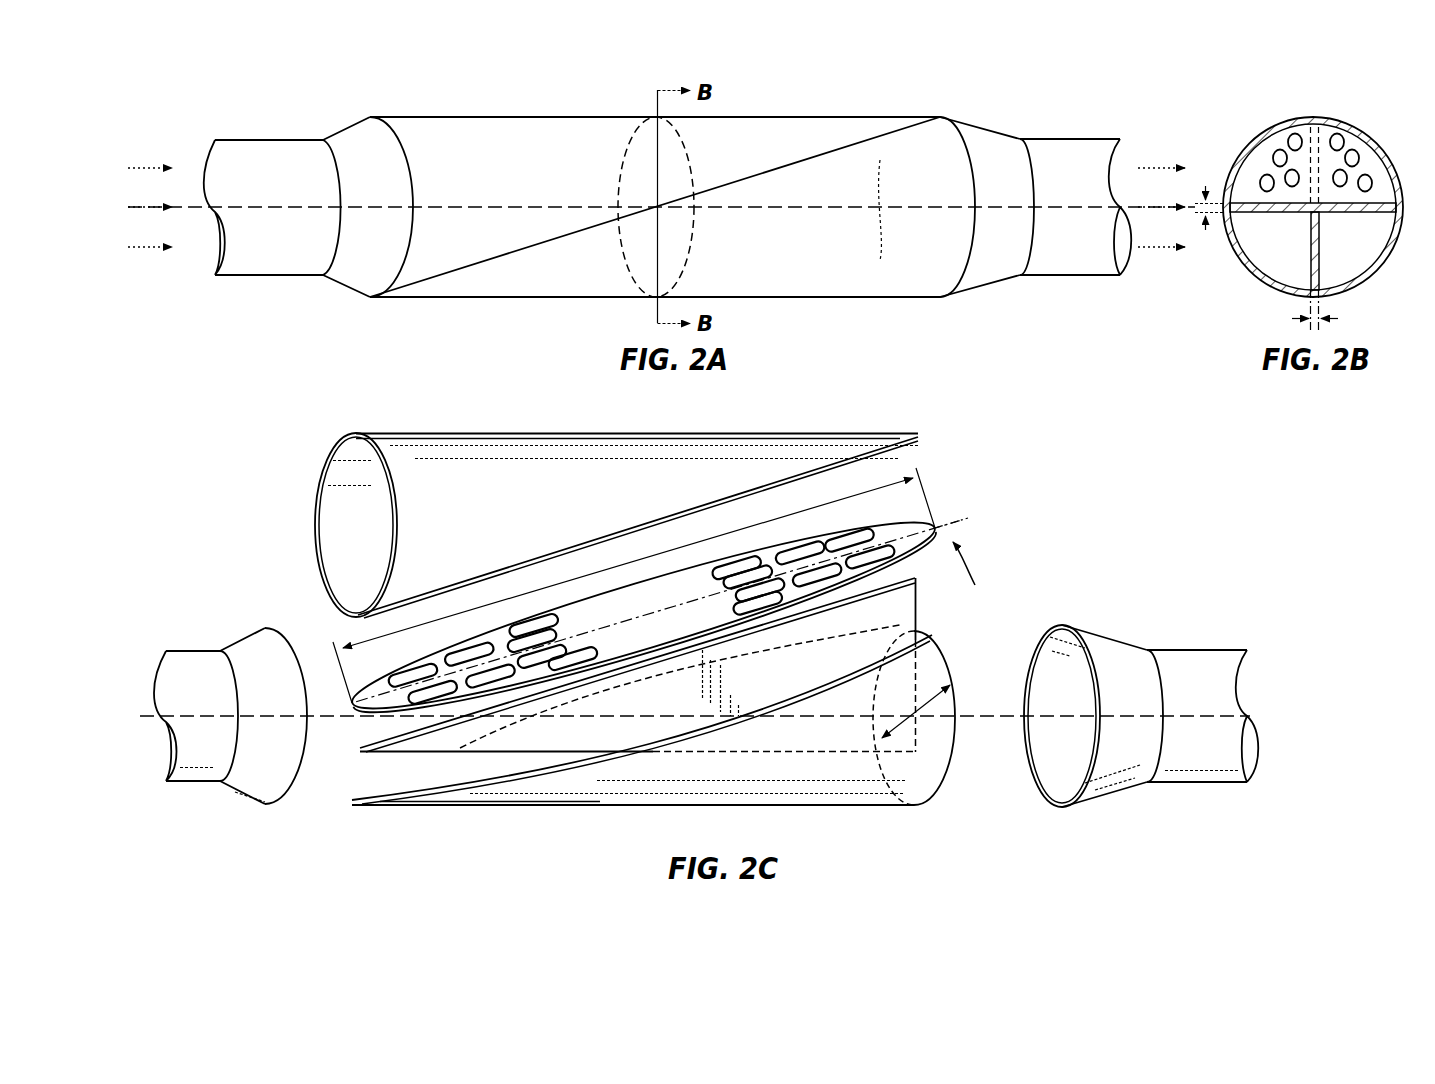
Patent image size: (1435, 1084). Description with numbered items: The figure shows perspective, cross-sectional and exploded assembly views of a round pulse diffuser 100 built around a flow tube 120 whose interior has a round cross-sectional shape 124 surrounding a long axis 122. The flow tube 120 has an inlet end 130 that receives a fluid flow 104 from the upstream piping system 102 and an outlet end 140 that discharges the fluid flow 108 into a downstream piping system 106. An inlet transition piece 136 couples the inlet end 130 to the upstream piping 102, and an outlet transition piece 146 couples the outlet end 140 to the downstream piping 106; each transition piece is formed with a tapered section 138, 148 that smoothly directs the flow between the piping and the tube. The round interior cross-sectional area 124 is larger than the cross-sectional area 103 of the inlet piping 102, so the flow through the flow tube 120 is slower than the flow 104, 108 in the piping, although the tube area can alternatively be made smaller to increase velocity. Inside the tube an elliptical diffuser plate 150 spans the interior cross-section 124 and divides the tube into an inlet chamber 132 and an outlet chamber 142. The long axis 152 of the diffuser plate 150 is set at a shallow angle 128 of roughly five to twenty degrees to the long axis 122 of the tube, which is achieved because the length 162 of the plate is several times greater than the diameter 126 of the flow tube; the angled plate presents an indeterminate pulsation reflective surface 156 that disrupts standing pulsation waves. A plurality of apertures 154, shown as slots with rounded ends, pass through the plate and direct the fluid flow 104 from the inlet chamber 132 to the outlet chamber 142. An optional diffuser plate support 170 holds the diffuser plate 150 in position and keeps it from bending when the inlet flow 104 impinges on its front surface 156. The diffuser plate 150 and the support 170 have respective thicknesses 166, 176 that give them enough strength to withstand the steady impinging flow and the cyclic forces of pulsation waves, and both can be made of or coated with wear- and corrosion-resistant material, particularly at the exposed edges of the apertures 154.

In FIG. 2A, the round pulse diffuser 100 is at (960, 92).
In FIG. 2C, the round pulse diffuser 100 is at (218, 476).
In FIG. 2A, the upstream piping system 102 is at (262, 138).
In FIG. 2C, the upstream piping system 102 is at (197, 651).
In FIG. 2C, the cross-sectional area of the inlet piping 103 is at (168, 750).
In FIG. 2A, the fluid flow 104 is at (155, 160).
In FIG. 2C, the fluid flow 104 is at (1250, 676).
In FIG. 2A, the downstream piping system 106 is at (1075, 139).
In FIG. 2C, the downstream piping system 106 is at (1205, 650).
In FIG. 2A, the fluid flow 108 is at (1157, 155).
In FIG. 2A, the flow tube 120 is at (530, 117).
In FIG. 2C, the flow tube 120 is at (835, 810).
In FIG. 2A, the long axis 122 is at (888, 210).
In FIG. 2A, the round cross-sectional shape 124 is at (690, 155).
In FIG. 2B, the round cross-sectional shape 124 is at (1233, 240).
In FIG. 2C, the diameter 126 is at (928, 708).
In FIG. 2C, the shallow angle 128 is at (986, 670).
In FIG. 2A, the inlet end 130 is at (372, 298).
In FIG. 2C, the inlet chamber 132 is at (352, 507).
In FIG. 2A, the inlet transition piece 136 is at (345, 122).
In FIG. 2C, the inlet transition piece 136 is at (244, 788).
In FIG. 2C, the tapered section 138 is at (240, 630).
In FIG. 2A, the outlet end 140 is at (958, 297).
In FIG. 2C, the outlet chamber 142 is at (928, 770).
In FIG. 2A, the outlet transition piece 146 is at (985, 128).
In FIG. 2C, the outlet transition piece 146 is at (1113, 642).
In FIG. 2C, the tapered section 148 is at (1118, 768).
In FIG. 2B, the elliptical diffuser plate 150 is at (1363, 160).
In FIG. 2C, the elliptical diffuser plate 150 is at (656, 613).
In FIG. 2C, the long axis of the elliptical diffuser plate 152 is at (957, 522).
In FIG. 2B, the apertures 154 is at (1281, 150).
In FIG. 2C, the apertures 154 is at (472, 650).
In FIG. 2C, the pulsation reflective surface 156 is at (652, 632).
In FIG. 2C, the length of the diffuser plate 162 is at (634, 585).
In FIG. 2B, the thickness of the diffuser plate 166 is at (1196, 200).
In FIG. 2B, the diffuser plate support 170 is at (1311, 258).
In FIG. 2C, the diffuser plate support 170 is at (703, 644).
In FIG. 2B, the thickness of the diffuser plate support 176 is at (1318, 328).